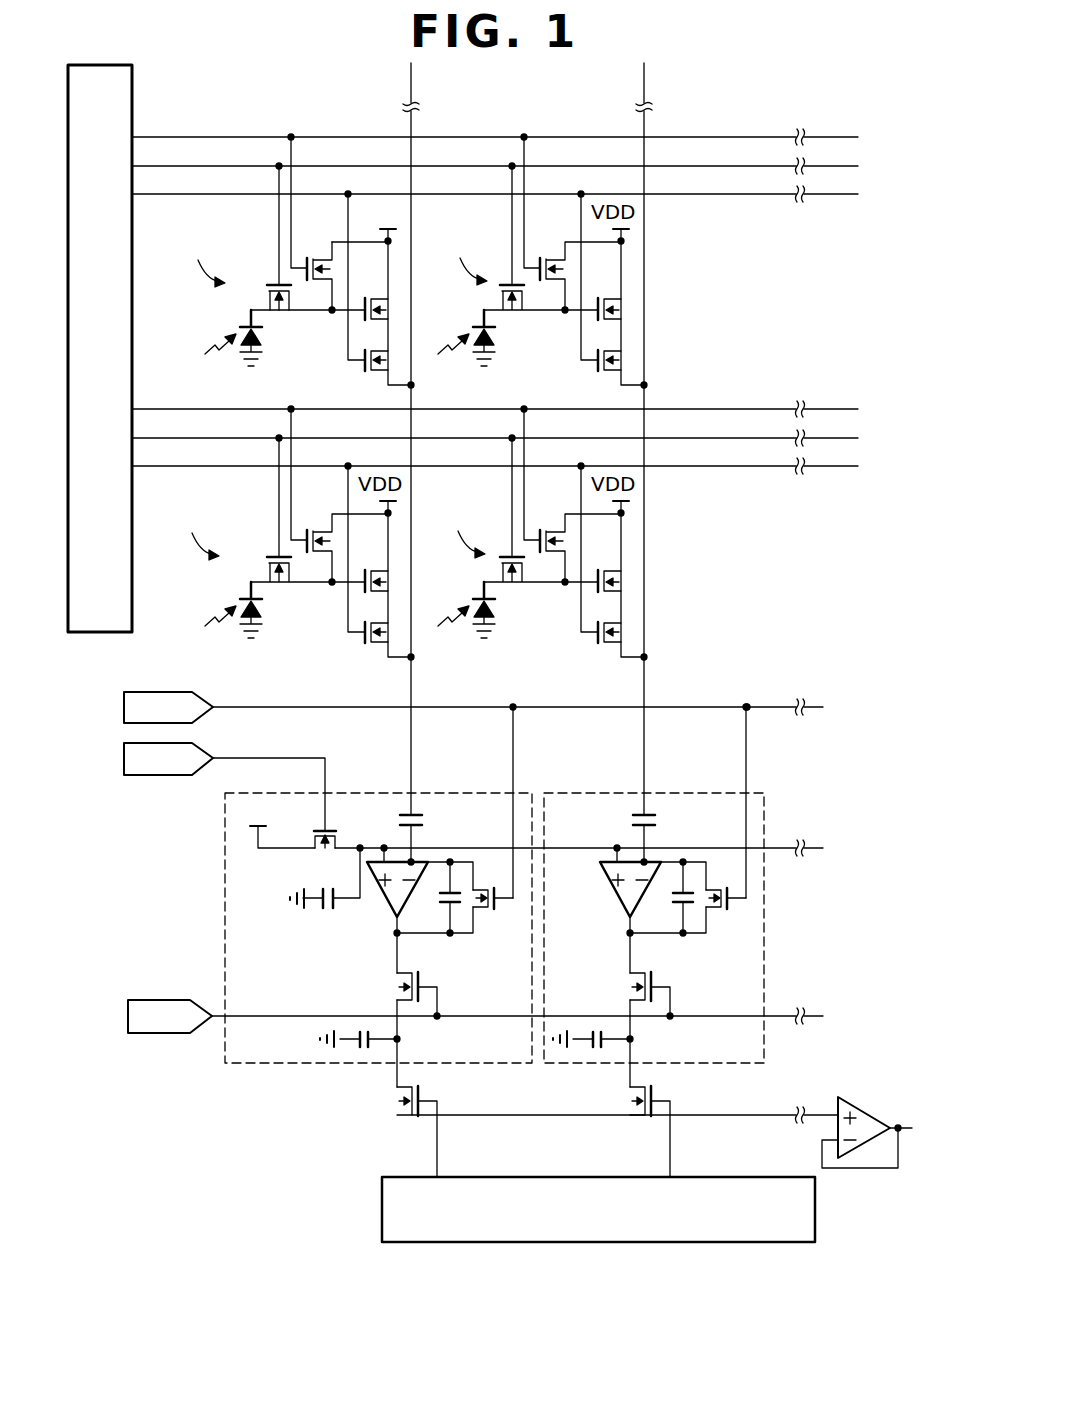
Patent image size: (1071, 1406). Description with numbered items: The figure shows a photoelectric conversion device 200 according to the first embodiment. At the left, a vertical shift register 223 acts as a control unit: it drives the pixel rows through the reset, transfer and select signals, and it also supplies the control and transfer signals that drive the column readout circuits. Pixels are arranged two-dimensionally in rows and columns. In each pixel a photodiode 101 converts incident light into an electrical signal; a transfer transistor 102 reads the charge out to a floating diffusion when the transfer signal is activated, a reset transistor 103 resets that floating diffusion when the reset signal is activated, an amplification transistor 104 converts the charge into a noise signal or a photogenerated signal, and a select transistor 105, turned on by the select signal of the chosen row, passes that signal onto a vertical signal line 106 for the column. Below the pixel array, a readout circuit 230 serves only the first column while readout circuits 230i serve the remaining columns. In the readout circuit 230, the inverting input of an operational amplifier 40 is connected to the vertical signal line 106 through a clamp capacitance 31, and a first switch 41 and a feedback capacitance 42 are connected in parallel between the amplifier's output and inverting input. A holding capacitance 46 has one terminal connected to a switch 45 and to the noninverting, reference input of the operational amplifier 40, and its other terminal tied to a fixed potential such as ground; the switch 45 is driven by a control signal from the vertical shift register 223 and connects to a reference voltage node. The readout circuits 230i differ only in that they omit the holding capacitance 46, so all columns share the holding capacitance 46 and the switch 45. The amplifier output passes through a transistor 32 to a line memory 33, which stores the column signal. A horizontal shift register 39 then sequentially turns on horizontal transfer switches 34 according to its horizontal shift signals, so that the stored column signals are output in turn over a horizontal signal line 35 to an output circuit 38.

The photoelectric conversion device 200 is at (270, 1246).
The vertical shift register 223 is at (133, 78).
The photodiode 101 is at (264, 342).
The transfer transistor 102 is at (286, 281).
The reset transistor 103 is at (326, 250).
The amplification transistor 104 is at (362, 320).
The select transistor 105 is at (362, 372).
The vertical signal line 106 is at (413, 686).
The clamp capacitance 31 is at (424, 821).
The transistor 32 is at (396, 985).
The line memory 33 is at (364, 1053).
The horizontal transfer switch 34 is at (396, 1097).
The horizontal signal line 35 is at (410, 1120).
The output circuit 38 is at (850, 1108).
The horizontal shift register 39 is at (770, 1244).
The operational amplifier 40 is at (383, 903).
The first switch 41 is at (481, 927).
The feedback capacitance 42 is at (438, 897).
The switch 45 is at (315, 859).
The holding capacitance 46 is at (331, 918).
The readout circuit 230 is at (373, 940).
The readout circuit 230i is at (735, 1068).